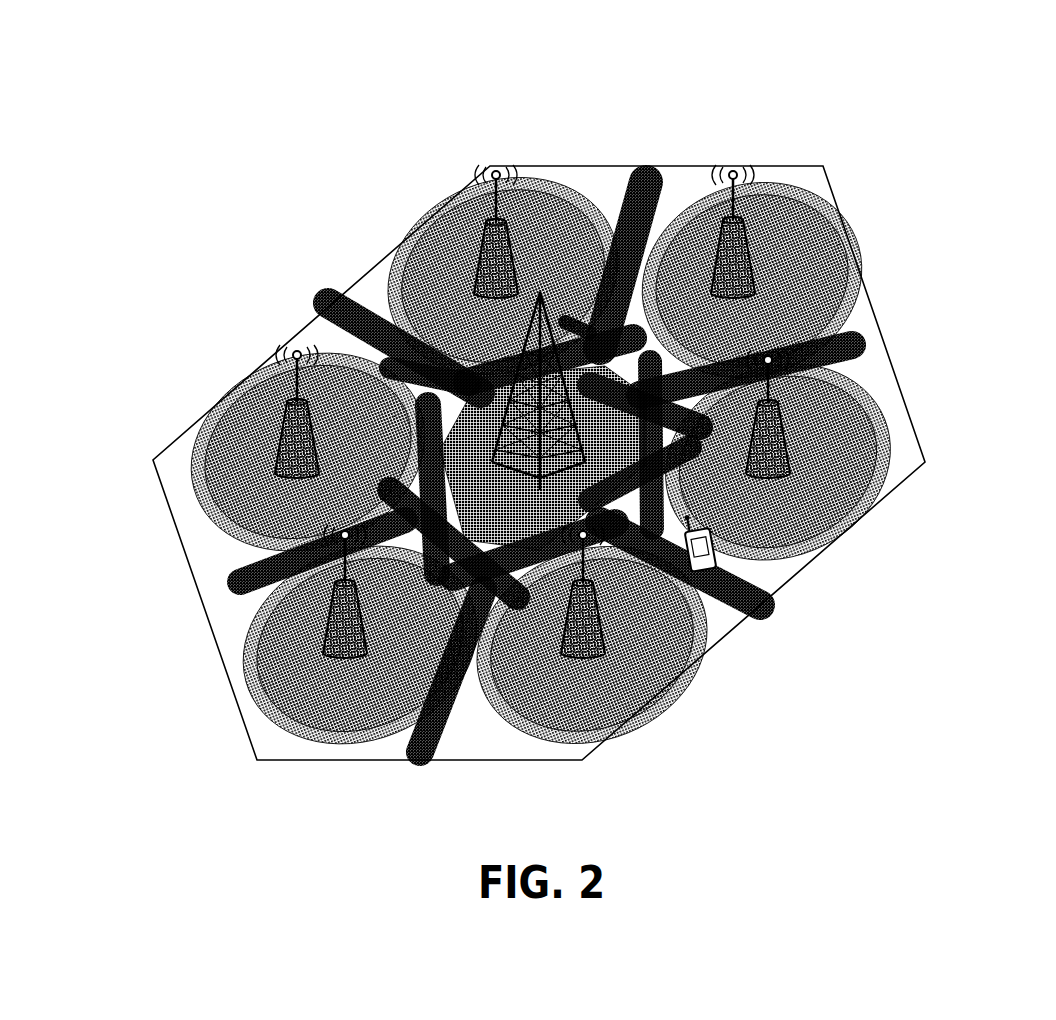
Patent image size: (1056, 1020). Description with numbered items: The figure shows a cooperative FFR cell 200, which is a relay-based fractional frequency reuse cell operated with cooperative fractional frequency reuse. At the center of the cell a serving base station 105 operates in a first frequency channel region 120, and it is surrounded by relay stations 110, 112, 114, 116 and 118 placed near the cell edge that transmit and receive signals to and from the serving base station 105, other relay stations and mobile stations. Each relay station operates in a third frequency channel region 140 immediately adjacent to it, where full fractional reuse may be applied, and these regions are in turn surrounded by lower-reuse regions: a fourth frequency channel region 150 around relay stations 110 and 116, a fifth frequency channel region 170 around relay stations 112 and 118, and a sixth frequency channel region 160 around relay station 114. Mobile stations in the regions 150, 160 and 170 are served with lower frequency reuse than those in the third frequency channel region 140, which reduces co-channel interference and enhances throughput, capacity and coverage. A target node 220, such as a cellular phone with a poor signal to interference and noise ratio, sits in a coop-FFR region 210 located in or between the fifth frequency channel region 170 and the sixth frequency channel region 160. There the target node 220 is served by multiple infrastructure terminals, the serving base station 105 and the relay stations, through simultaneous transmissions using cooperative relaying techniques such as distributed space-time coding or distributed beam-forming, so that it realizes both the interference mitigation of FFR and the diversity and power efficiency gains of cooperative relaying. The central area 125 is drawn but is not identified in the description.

The cooperative FFR cell 200 is at (603, 80).
The serving base station 105 is at (538, 308).
The relay station 110 is at (735, 270).
The relay station 112 is at (493, 250).
The relay station 114 is at (275, 455).
The relay station 116 is at (347, 628).
The relay station 118 is at (597, 655).
The first frequency channel region 120 is at (775, 457).
The central cell coverage area 125 is at (542, 458).
The third frequency channel region 140 is at (541, 461).
The fourth frequency channel region 150 is at (843, 236).
The sixth frequency channel region 160 is at (222, 420).
The fifth frequency channel region 170 is at (428, 230).
The coop-FFR region 210 is at (758, 604).
The target node 220 is at (712, 540).